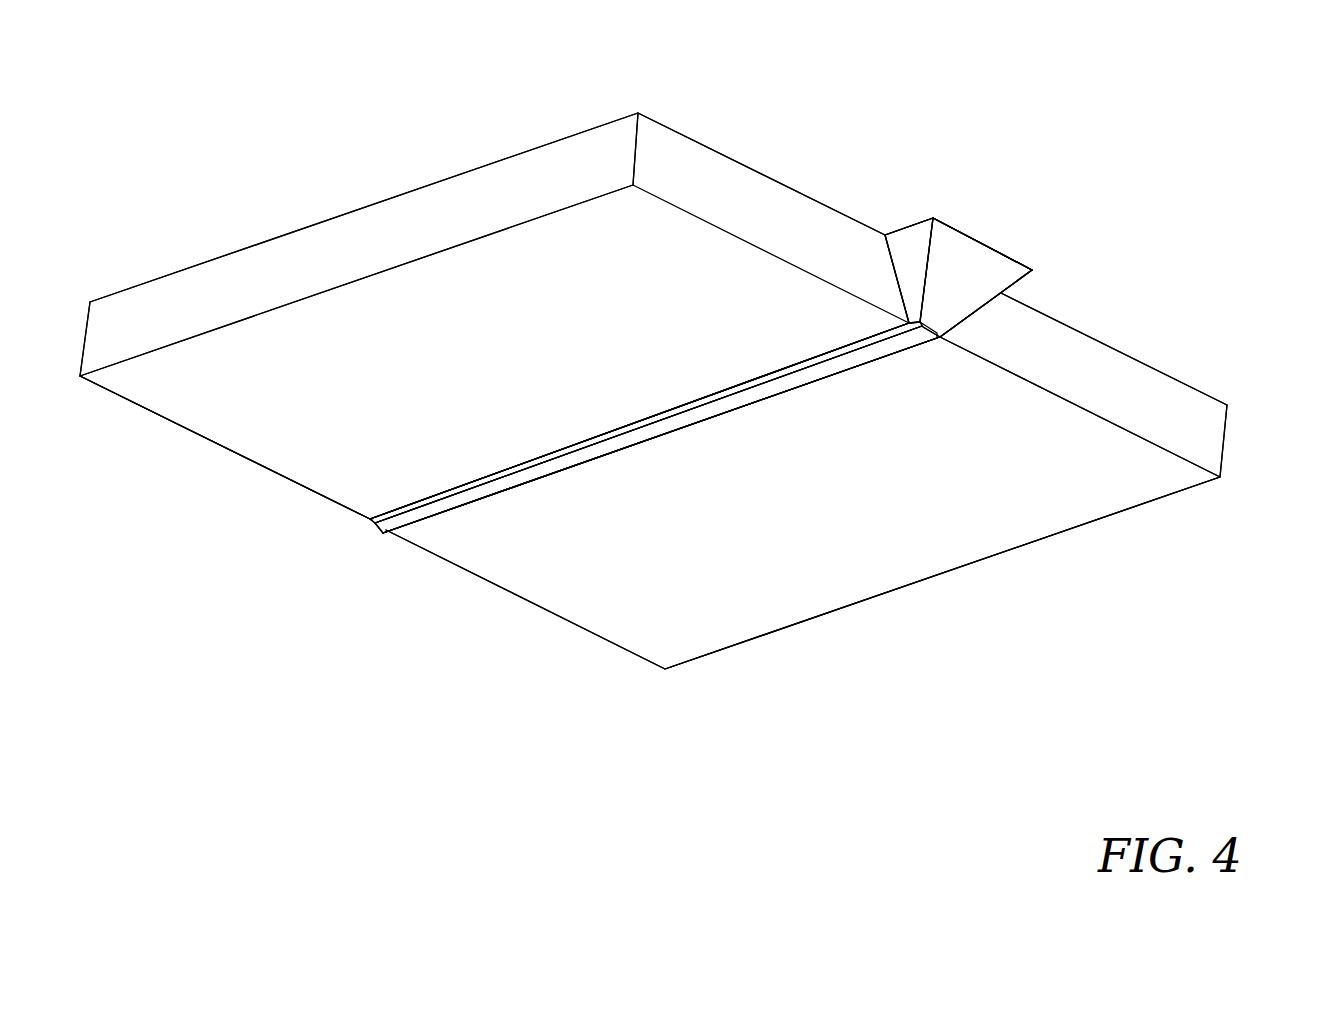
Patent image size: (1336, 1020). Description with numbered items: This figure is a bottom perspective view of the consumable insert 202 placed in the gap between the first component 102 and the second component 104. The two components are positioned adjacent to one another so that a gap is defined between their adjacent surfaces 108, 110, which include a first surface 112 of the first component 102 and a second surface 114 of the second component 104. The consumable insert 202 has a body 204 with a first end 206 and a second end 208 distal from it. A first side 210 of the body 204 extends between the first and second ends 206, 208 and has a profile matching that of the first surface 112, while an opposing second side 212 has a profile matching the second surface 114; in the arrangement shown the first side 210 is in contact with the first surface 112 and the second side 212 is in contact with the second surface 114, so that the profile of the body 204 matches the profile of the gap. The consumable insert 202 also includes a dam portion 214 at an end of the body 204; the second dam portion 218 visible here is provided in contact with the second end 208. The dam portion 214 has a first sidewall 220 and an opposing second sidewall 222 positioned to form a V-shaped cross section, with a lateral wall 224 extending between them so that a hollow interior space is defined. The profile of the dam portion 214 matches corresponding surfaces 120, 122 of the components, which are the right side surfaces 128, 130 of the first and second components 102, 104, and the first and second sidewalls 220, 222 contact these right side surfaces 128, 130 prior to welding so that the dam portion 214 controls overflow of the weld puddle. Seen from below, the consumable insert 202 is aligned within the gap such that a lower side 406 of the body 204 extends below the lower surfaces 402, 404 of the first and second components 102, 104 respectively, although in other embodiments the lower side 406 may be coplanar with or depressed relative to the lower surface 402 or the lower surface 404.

The first component 102 is at (462, 336).
The second component 104 is at (834, 532).
The adjacent surface of the first component 108 is at (707, 400).
The adjacent surface of the second component 110 is at (747, 408).
The first surface 112 is at (598, 432).
The second surface 114 is at (650, 445).
The corresponding surface 120 is at (675, 129).
The corresponding surface 122 is at (1162, 368).
The right side surface of the first component 128 is at (727, 190).
The right side surface of the second component 130 is at (1183, 423).
The consumable insert 202 is at (977, 218).
The body 204 is at (875, 353).
The first end 206 is at (323, 518).
The second end 208 is at (1063, 255).
The first side 210 is at (548, 458).
The second side 212 is at (555, 478).
The dam portion 214 is at (903, 216).
The second dam portion 218 is at (1008, 247).
The first sidewall 220 is at (888, 230).
The second sidewall 222 is at (1020, 278).
The lateral wall 224 is at (963, 265).
The lower surface of the first component 402 is at (211, 403).
The lower surface of the second component 404 is at (778, 578).
The lower side 406 is at (818, 375).